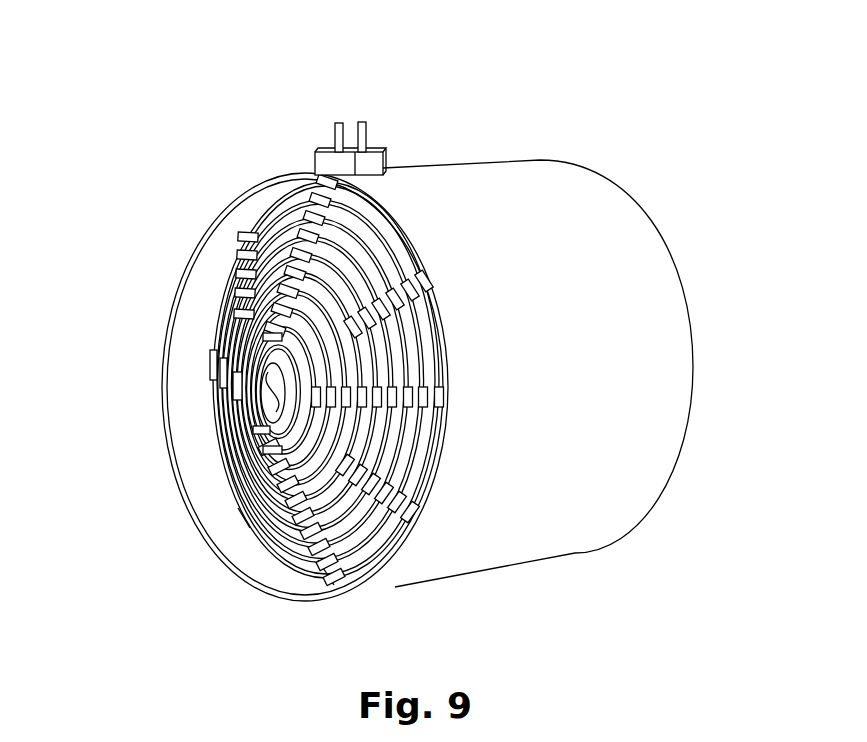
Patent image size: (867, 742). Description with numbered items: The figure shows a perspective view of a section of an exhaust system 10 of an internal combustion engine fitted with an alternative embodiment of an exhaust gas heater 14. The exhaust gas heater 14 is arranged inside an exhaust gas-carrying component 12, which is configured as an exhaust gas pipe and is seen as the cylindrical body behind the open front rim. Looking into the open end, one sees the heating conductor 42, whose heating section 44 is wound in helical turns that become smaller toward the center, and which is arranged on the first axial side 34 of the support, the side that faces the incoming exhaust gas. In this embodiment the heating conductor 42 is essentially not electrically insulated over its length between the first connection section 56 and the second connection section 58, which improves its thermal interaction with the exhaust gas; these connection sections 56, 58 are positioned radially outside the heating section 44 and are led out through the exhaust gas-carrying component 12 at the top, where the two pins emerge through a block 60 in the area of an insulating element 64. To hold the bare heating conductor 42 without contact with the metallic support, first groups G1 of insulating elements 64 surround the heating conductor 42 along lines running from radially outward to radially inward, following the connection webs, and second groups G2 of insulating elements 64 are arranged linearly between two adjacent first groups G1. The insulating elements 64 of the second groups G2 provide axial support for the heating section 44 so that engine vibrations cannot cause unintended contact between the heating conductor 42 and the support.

The exhaust system 10 is at (675, 167).
The exhaust gas-carrying component 12 is at (575, 195).
The exhaust gas heater 14 is at (266, 546).
The first axial side 34 is at (200, 442).
The heating conductor 42 is at (228, 326).
The heating section 44 is at (415, 362).
The first connection section 56 is at (338, 137).
The second connection section 58 is at (362, 122).
The connector 60 is at (386, 170).
The insulating element 64 is at (405, 515).
The first group of insulating elements G1 is at (327, 580).
The second group of insulating elements G2 is at (225, 510).